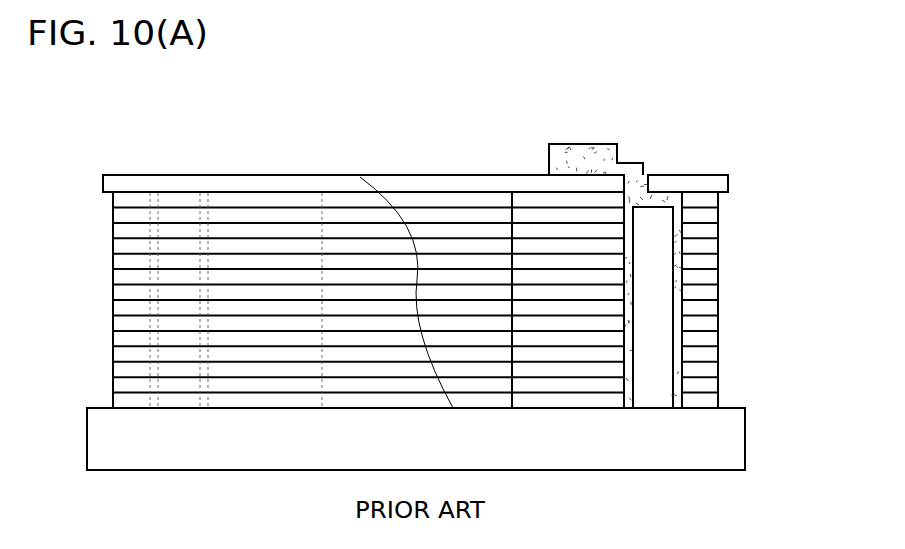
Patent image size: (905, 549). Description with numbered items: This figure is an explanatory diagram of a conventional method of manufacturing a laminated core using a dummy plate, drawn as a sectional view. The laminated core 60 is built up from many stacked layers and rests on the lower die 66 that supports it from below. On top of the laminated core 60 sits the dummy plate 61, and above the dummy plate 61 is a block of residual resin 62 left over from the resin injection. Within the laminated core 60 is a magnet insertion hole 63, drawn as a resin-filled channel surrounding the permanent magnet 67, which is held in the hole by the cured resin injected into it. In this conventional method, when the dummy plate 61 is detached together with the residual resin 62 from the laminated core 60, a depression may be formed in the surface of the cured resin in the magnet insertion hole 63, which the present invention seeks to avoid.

The laminated core 60 is at (722, 318).
The dummy plate 61 is at (703, 185).
The residual resin 62 is at (575, 155).
The magnet insertion hole 63 is at (675, 297).
The lower die 66 is at (730, 428).
The permanent magnet 67 is at (653, 393).